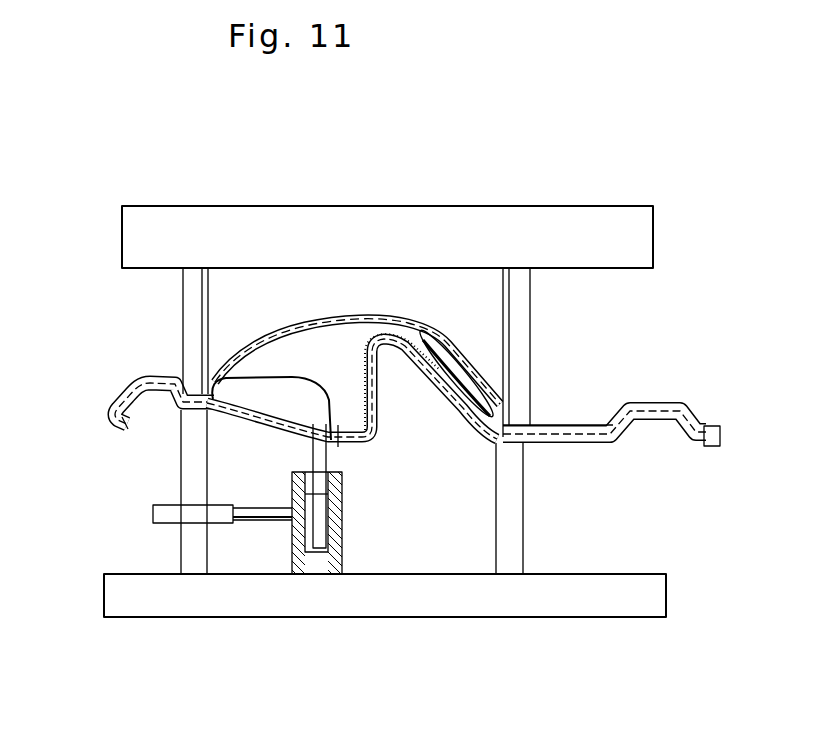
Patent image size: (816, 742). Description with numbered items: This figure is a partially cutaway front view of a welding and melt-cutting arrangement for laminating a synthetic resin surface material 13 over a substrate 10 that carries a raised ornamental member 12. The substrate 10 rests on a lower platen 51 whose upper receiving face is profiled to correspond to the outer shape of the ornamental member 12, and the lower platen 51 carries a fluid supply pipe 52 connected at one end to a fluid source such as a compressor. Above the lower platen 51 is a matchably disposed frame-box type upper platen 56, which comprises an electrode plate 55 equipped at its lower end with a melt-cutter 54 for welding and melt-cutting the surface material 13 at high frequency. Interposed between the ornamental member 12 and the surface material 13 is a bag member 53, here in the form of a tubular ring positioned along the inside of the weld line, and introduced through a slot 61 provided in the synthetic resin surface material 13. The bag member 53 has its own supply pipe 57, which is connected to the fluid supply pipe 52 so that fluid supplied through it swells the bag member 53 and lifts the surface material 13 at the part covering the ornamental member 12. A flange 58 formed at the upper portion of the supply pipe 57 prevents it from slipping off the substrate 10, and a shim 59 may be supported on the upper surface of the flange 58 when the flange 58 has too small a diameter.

The substrate 10 is at (615, 442).
The ornamental member 12 is at (372, 340).
The synthetic resin surface material 13 is at (423, 325).
The lower platen 51 is at (412, 601).
The fluid supply pipe 52 is at (218, 508).
The bag member 53 is at (251, 382).
The melt-cutter 54 is at (200, 295).
The electrode plate 55 is at (197, 372).
The upper platen 56 is at (538, 222).
The supply pipe 57 is at (307, 457).
The flange 58 is at (335, 448).
The shim 59 is at (345, 444).
The slot 61 is at (320, 316).